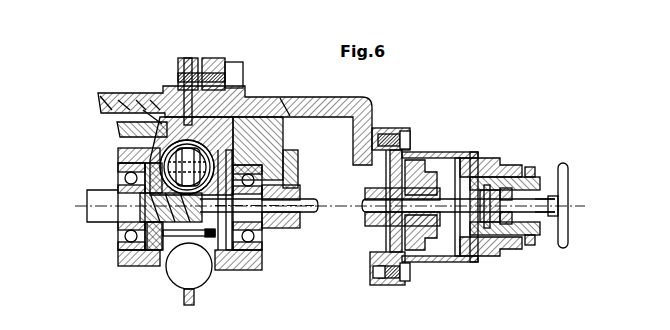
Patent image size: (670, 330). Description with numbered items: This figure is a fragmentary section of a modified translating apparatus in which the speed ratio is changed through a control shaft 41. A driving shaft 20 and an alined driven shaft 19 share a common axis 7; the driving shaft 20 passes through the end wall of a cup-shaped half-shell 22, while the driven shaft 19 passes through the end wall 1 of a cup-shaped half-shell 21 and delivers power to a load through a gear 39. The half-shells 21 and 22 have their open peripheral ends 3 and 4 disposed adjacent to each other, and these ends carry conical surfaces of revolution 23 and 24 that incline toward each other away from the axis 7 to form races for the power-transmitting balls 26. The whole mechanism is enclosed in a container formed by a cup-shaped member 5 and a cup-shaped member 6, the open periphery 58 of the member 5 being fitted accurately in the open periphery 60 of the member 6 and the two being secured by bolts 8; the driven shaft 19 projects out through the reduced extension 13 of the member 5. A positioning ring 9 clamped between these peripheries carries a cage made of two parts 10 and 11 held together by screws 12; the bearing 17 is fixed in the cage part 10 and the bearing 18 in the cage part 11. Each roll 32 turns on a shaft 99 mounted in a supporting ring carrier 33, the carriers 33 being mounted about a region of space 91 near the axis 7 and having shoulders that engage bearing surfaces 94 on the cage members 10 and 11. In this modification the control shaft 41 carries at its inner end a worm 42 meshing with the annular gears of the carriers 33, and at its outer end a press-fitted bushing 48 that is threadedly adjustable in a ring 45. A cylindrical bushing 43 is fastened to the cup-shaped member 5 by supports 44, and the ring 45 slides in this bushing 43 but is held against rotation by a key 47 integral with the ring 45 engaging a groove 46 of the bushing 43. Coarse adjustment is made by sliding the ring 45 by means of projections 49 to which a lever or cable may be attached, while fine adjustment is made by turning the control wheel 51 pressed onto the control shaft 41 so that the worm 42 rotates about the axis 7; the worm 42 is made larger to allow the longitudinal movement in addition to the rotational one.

The end wall 1 is at (303, 125).
The open peripheral end 3 is at (233, 90).
The open peripheral end 4 is at (132, 95).
The cup-shaped member 5 is at (367, 98).
The cup-shaped member 6 is at (152, 116).
The common axis 7 is at (322, 206).
The bolts 8 is at (240, 76).
The positioning ring 9 is at (150, 97).
The cage part 10 is at (272, 148).
The cage part 11 is at (117, 163).
The screws 12 is at (225, 270).
The extension 13 is at (407, 133).
The bearing 17 is at (264, 245).
The bearing 18 is at (118, 250).
The driven shaft 19 is at (297, 189).
The driving shaft 20 is at (98, 220).
The cup-shaped half-shell 21 is at (293, 168).
The cup-shaped half-shell 22 is at (117, 130).
The surface of revolution 23 is at (245, 100).
The surface of revolution 24 is at (128, 97).
The power-transmitting balls 26 is at (195, 273).
The roll 32 is at (118, 160).
The supporting ring carrier 33 is at (253, 98).
The gear 39 is at (425, 167).
The control shaft 41 is at (538, 200).
The worm 42 is at (156, 230).
The cylindrical bushing 43 is at (513, 248).
The supports 44 is at (458, 262).
The ring 45 is at (545, 233).
The groove 46 is at (465, 165).
The key 47 is at (498, 173).
The bushing 48 is at (500, 240).
The projections 49 is at (532, 165).
The control wheel 51 is at (562, 187).
The open periphery 58 is at (212, 58).
The open periphery 60 is at (182, 58).
The region of space 91 is at (182, 227).
The bearing surfaces 94 is at (290, 98).
The shaft 99 is at (100, 100).